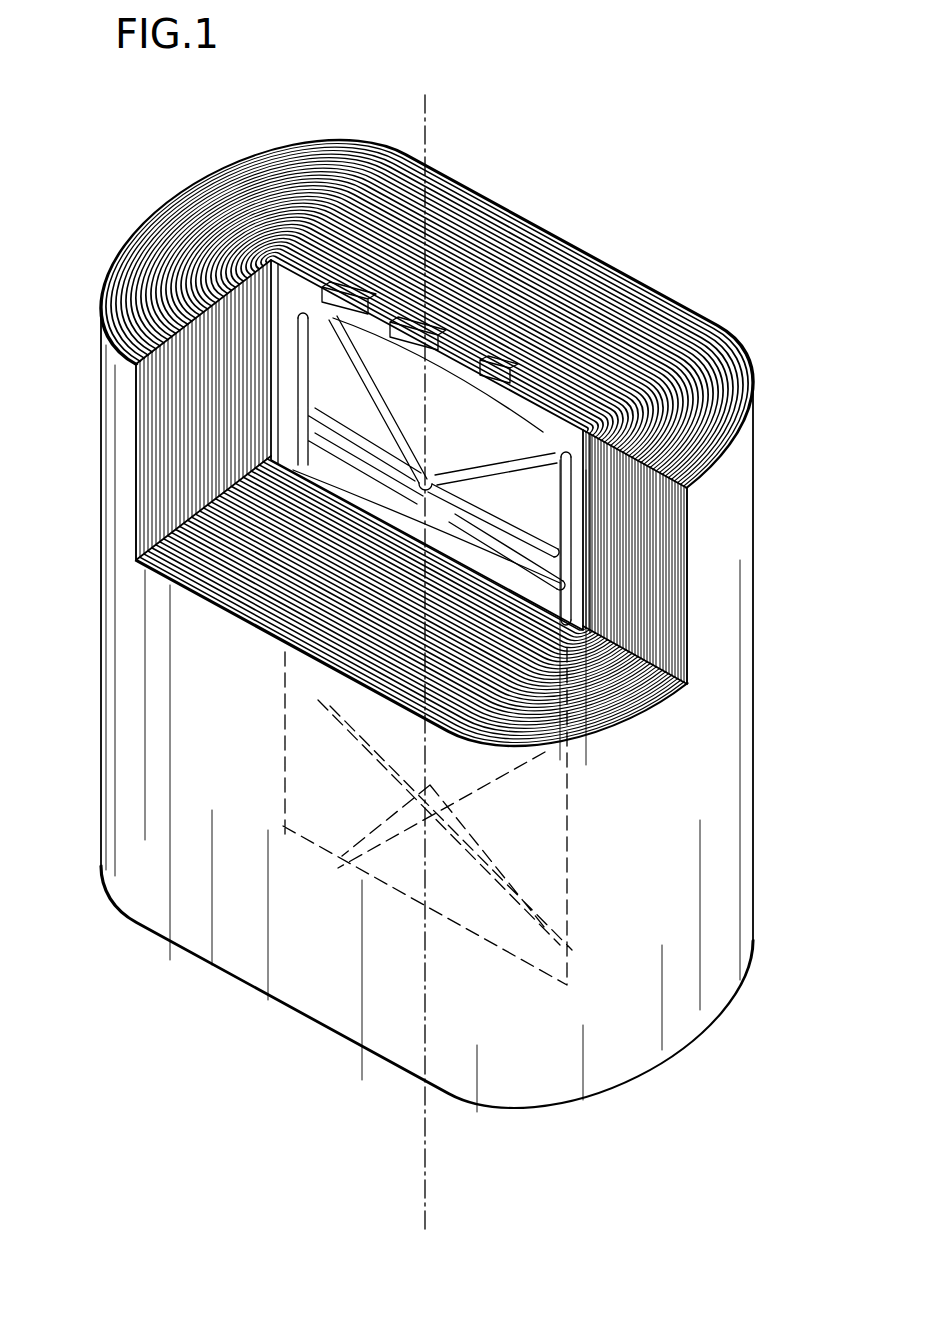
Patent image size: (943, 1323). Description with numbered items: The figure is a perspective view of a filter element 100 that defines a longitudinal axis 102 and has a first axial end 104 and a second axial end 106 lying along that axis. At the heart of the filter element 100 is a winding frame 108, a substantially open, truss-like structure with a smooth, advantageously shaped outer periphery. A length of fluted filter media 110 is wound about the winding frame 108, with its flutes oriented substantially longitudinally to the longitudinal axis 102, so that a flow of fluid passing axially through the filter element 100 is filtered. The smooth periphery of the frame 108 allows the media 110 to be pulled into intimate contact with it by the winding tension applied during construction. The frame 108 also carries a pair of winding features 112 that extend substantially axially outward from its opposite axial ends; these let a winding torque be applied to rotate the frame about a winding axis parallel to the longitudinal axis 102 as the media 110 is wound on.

The filter element 100 is at (554, 150).
The longitudinal axis 102 is at (428, 100).
The first axial end 104 is at (685, 1096).
The second axial end 106 is at (684, 306).
The winding frame 108 is at (300, 438).
The fluted filter media 110 is at (724, 396).
The winding features 112 is at (459, 334).